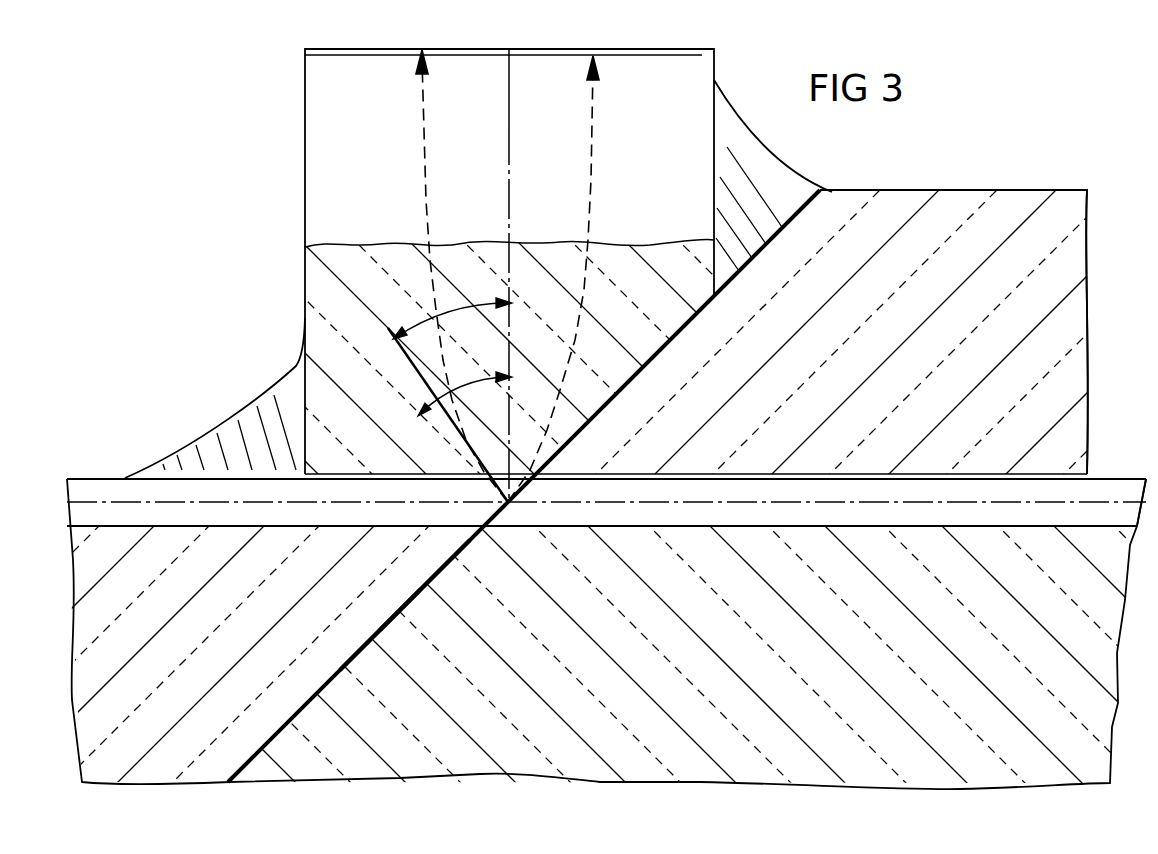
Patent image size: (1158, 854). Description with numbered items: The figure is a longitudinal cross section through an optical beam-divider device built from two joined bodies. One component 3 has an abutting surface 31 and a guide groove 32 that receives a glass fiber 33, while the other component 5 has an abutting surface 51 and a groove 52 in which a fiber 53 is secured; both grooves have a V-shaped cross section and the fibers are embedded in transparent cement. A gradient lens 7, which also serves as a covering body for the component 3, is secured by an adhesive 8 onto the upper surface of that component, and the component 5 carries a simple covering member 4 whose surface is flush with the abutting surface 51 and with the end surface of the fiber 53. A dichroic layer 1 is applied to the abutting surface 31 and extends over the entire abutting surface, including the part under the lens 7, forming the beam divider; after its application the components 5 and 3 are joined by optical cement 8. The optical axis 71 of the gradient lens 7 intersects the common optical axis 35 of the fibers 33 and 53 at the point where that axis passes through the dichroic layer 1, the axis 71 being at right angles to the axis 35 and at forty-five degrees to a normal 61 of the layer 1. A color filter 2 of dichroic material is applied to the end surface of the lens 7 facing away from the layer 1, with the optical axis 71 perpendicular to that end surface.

The dichroic layer 1 is at (449, 558).
The color filter 2 is at (702, 55).
The component 3 is at (133, 618).
The covering member 4 is at (942, 212).
The component 5 is at (1070, 643).
The gradient lens 7 is at (340, 150).
The adhesive 8 is at (253, 417).
The abutting surface 31 is at (428, 582).
The guide groove 32 is at (97, 490).
The glass fiber 33 is at (123, 517).
The common optical axis 35 is at (880, 502).
The abutting surface 51 is at (397, 612).
The groove 52 is at (1102, 500).
The fiber 53 is at (1023, 490).
The normal 61 is at (438, 430).
The optical axis 71 is at (510, 162).